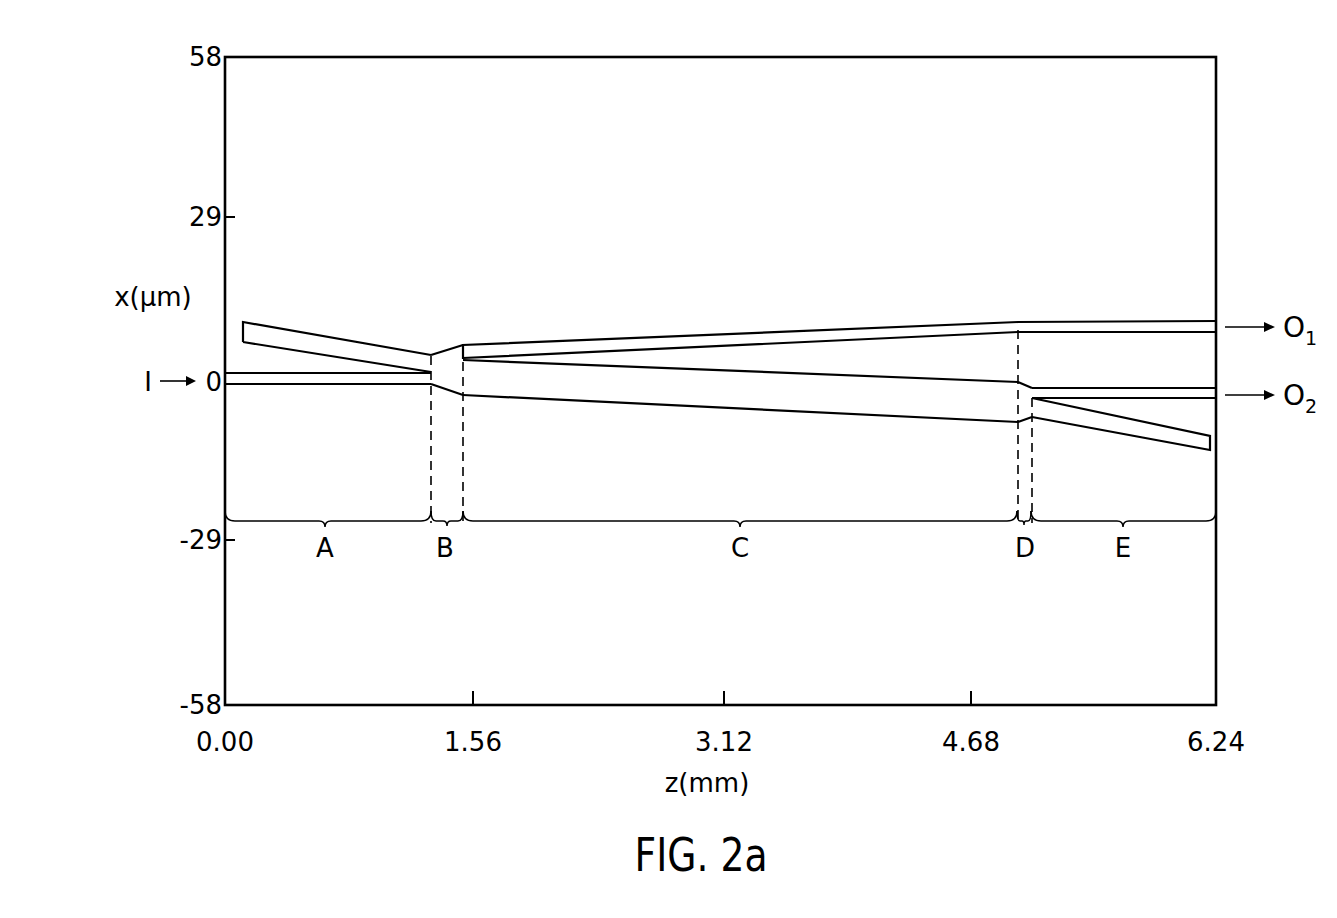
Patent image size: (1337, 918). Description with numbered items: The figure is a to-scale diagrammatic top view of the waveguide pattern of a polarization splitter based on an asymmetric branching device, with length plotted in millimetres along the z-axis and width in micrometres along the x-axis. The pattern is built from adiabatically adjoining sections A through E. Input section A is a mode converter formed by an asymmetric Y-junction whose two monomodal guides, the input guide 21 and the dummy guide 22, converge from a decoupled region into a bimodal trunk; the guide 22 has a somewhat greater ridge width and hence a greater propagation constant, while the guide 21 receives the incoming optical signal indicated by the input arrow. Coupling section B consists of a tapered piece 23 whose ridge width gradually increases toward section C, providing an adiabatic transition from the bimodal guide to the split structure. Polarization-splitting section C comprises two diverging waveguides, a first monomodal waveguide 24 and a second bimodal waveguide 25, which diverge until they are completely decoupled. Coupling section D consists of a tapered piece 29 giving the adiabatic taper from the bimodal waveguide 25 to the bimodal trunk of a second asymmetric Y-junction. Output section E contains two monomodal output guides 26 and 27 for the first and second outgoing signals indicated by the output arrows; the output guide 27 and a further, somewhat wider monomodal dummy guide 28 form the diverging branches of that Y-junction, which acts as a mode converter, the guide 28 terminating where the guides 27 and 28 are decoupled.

The input guide 21 is at (322, 385).
The dummy guide 22 is at (328, 348).
The tapered piece 23 is at (448, 367).
The first monomodal waveguide 24 is at (632, 343).
The second bimodal waveguide 25 is at (617, 392).
The output guide 26 is at (1075, 325).
The output guide 27 is at (1150, 392).
The dummy guide 28 is at (1090, 418).
The tapered piece 29 is at (1025, 403).